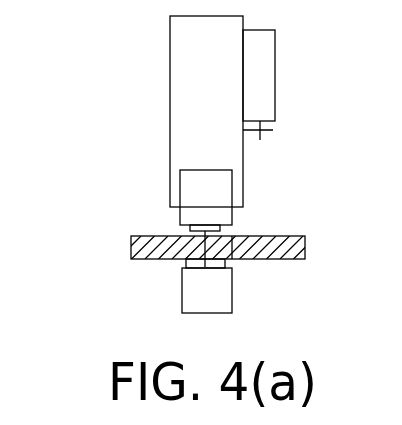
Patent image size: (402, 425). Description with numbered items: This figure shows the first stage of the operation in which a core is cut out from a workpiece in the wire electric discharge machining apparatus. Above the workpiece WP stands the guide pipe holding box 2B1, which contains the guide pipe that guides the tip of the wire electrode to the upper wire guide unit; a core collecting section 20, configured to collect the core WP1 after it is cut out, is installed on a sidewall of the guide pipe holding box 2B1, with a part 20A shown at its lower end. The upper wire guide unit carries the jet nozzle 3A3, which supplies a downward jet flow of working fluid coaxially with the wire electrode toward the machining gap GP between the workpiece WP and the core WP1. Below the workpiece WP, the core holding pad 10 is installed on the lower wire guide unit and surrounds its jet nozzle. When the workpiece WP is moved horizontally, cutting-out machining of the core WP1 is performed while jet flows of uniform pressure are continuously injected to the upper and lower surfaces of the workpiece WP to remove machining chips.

The guide pipe holding box 2B1 is at (177, 86).
The core collecting section 20 is at (270, 82).
The connecting portion of the holder 20A is at (275, 130).
The jet nozzle 3A3 is at (218, 232).
The machining gap GP is at (200, 236).
The workpiece WP is at (131, 243).
The core WP1 is at (233, 259).
The core holding pad 10 is at (186, 262).